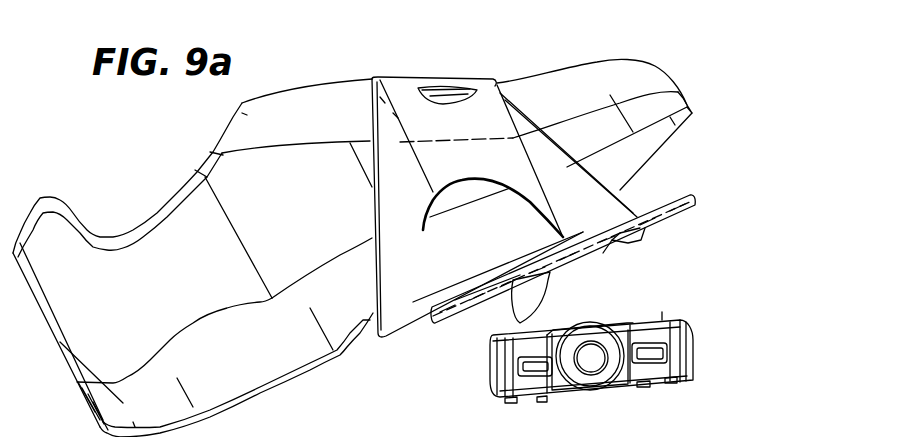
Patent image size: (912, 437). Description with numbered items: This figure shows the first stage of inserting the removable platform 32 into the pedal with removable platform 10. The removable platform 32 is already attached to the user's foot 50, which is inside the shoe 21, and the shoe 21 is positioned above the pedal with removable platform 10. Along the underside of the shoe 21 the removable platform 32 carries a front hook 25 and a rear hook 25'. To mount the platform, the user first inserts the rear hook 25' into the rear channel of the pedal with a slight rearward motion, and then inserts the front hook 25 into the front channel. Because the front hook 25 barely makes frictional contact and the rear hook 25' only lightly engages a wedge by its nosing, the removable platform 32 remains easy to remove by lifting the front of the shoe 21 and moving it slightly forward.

The pedal with removable platform 10 is at (707, 360).
The shoe 21 is at (352, 226).
The front hook 25 is at (674, 252).
The rear hook 25' is at (467, 344).
The removable platform 32 is at (672, 197).
The foot 50 is at (420, 112).